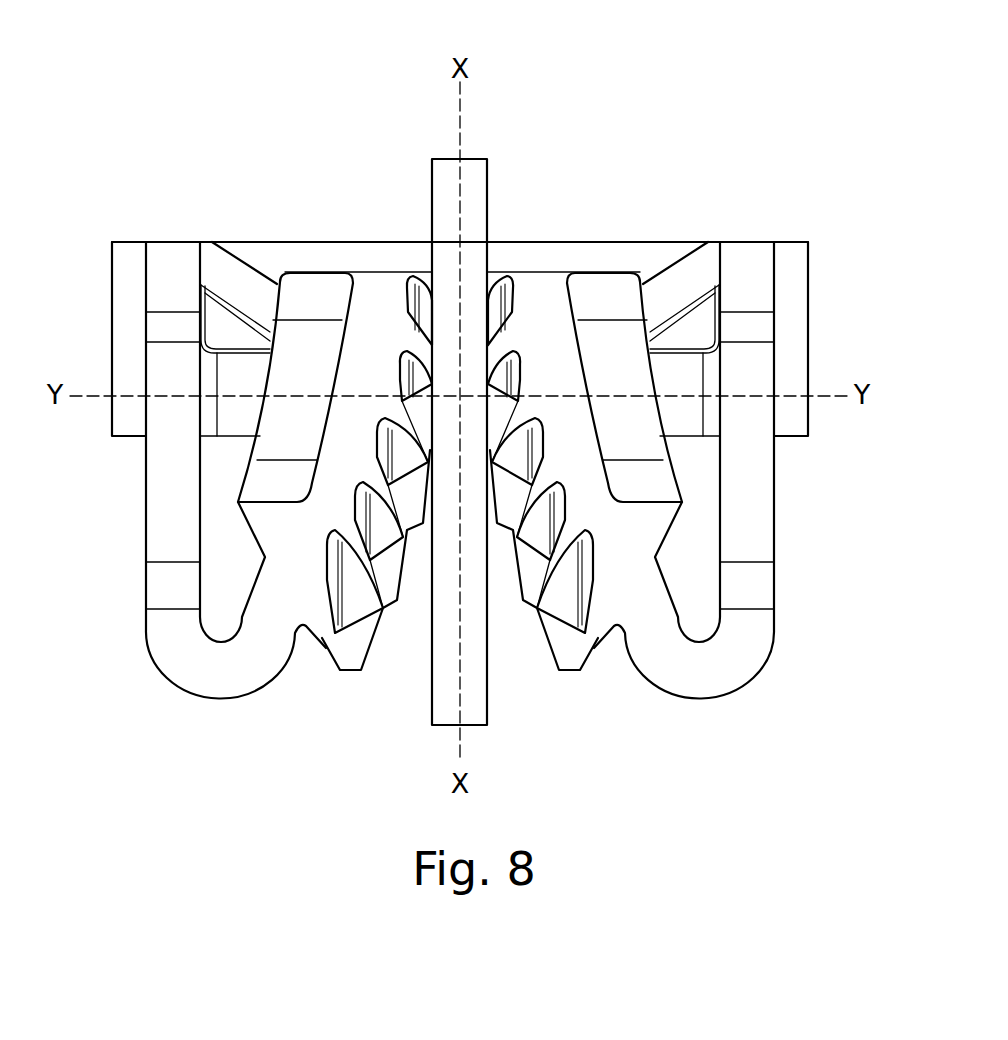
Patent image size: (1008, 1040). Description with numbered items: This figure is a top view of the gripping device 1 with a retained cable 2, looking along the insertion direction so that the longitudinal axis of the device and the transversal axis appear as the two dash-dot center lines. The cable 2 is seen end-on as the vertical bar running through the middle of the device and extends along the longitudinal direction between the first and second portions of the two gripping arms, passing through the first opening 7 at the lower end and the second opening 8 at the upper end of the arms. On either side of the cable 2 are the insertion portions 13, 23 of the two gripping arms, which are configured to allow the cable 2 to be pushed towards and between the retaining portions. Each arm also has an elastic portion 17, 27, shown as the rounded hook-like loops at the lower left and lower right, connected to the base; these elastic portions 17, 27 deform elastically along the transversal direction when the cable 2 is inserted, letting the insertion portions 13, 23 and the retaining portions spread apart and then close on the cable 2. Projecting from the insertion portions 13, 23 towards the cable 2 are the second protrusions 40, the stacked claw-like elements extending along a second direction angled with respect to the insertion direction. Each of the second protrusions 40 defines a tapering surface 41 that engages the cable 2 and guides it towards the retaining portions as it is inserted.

The gripping device 1 is at (211, 99).
The cable 2 is at (443, 213).
The first opening 7 is at (415, 655).
The second opening 8 is at (498, 262).
The insertion portion 13 is at (357, 450).
The elastic portion 17 is at (245, 645).
The insertion portion 23 is at (560, 422).
The elastic portion 27 is at (698, 688).
The second protrusions 40 is at (547, 482).
The tapering surface 41 is at (392, 380).